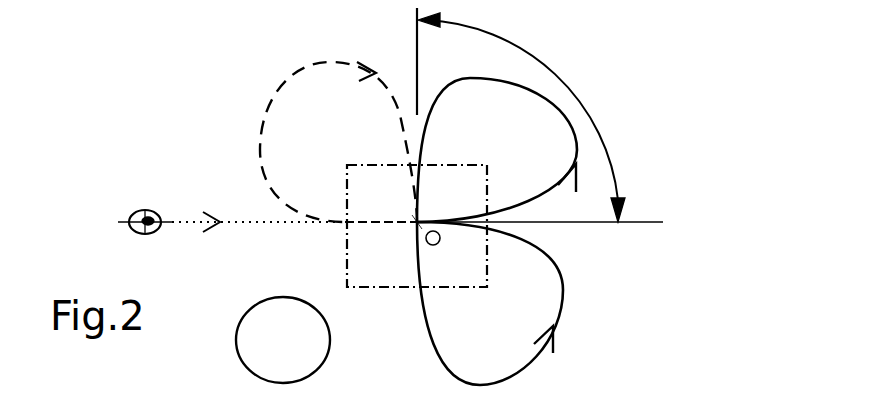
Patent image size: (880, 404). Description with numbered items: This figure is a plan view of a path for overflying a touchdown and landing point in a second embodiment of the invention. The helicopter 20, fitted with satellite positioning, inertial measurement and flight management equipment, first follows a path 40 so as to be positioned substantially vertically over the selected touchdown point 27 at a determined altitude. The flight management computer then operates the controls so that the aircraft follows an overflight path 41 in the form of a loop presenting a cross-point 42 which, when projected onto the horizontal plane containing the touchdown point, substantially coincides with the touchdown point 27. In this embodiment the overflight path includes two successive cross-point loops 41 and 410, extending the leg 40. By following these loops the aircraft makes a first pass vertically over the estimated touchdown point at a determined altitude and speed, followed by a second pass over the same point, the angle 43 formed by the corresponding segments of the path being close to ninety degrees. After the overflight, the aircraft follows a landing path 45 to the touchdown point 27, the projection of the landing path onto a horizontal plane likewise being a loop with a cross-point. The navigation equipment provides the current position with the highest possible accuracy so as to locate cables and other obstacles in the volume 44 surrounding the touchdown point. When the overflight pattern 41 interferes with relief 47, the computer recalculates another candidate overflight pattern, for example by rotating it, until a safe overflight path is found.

The helicopter 20 is at (138, 211).
The path 40 is at (237, 222).
The overflight path 41 is at (495, 77).
The cross-point loop 410 is at (563, 275).
The cross-point 42 is at (412, 228).
The angle 43 is at (582, 100).
The volume 44 is at (397, 287).
The landing path 45 is at (283, 100).
The touchdown point 27 is at (441, 239).
The relief 47 is at (297, 355).